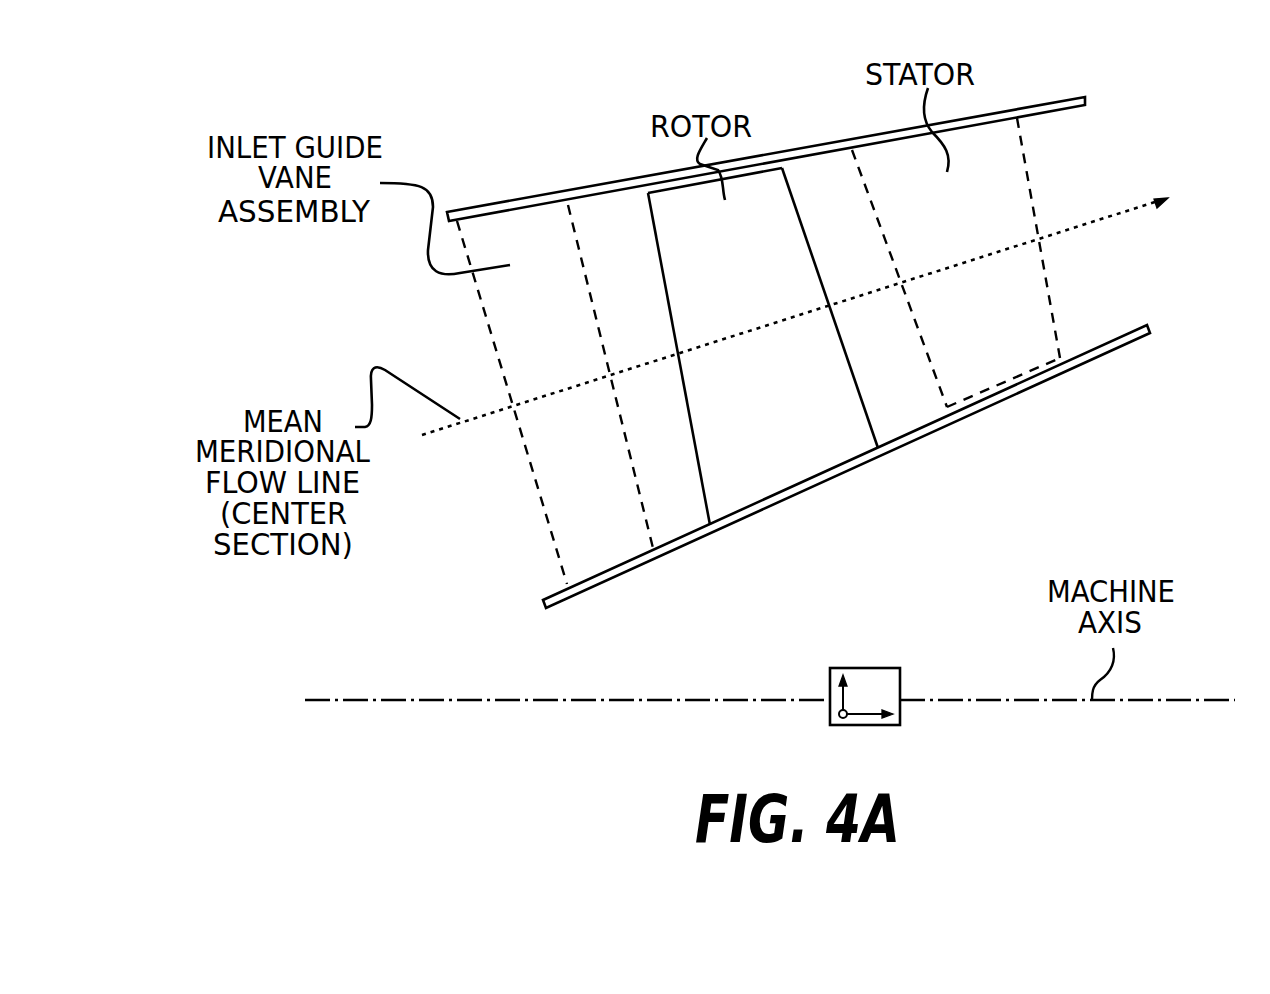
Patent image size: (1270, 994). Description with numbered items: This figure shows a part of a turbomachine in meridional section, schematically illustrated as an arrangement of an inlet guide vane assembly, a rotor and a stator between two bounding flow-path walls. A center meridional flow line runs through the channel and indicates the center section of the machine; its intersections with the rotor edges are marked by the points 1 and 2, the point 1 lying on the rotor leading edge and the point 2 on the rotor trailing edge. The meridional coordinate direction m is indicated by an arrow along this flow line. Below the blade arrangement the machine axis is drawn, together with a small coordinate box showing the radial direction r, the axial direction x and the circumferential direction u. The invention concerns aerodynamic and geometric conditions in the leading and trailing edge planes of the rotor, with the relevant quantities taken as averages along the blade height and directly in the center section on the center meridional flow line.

The intersection point of center meridional flow line with rotor leading edge 1 is at (678, 348).
The intersection point of center meridional flow line with rotor trailing edge 2 is at (828, 302).
The meridional coordinate direction along mean meridional flow line m is at (815, 303).
The radial coordinate axis r is at (844, 676).
The axial coordinate axis (machine axis direction) x is at (882, 714).
The circumferential (tangential) coordinate at origin u is at (835, 731).